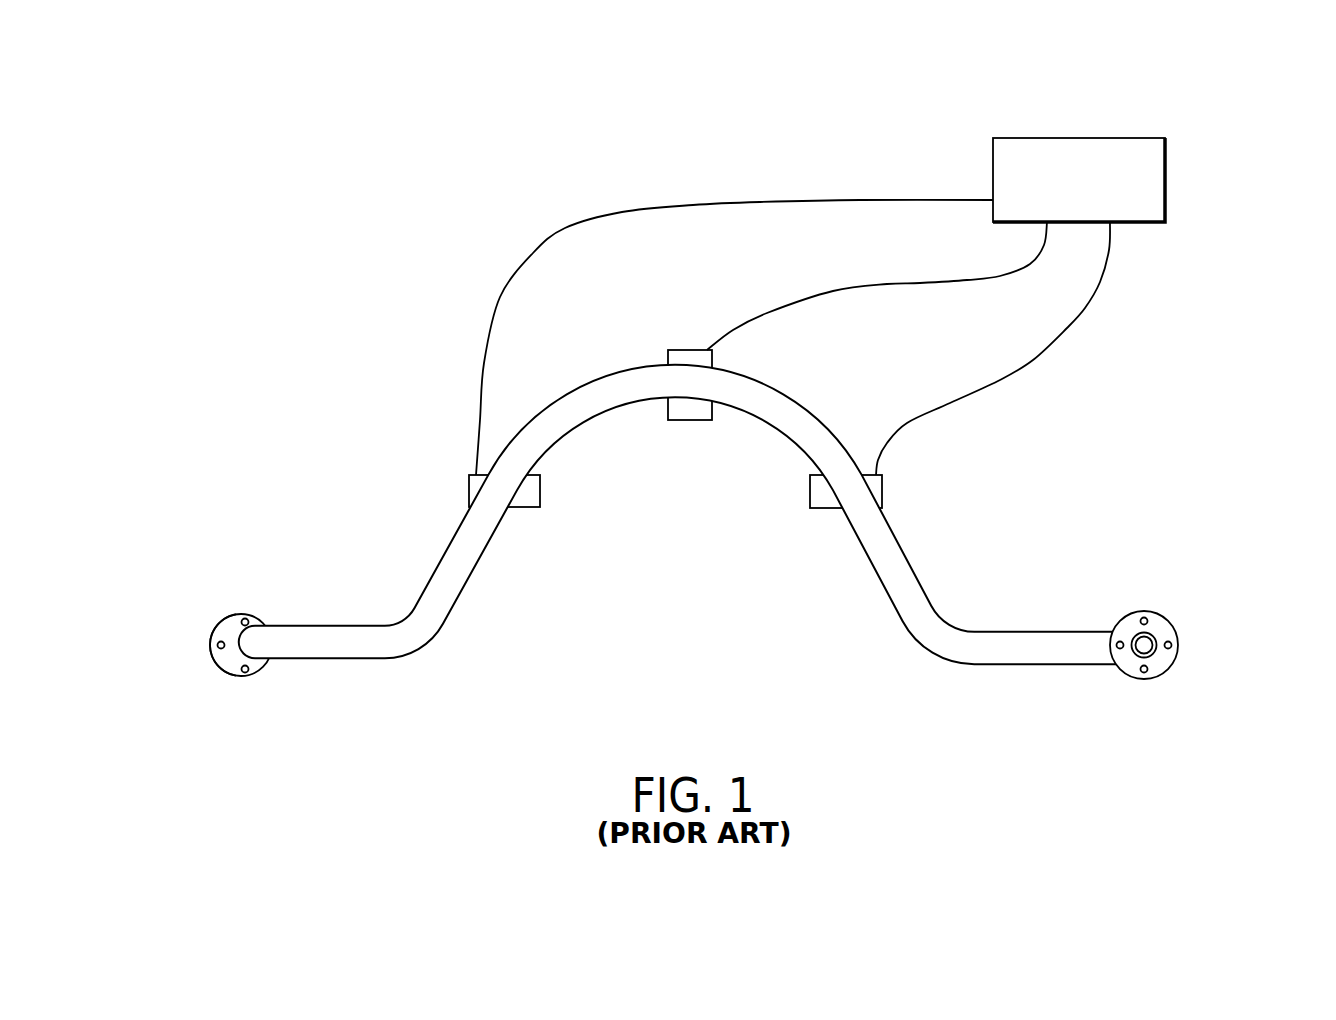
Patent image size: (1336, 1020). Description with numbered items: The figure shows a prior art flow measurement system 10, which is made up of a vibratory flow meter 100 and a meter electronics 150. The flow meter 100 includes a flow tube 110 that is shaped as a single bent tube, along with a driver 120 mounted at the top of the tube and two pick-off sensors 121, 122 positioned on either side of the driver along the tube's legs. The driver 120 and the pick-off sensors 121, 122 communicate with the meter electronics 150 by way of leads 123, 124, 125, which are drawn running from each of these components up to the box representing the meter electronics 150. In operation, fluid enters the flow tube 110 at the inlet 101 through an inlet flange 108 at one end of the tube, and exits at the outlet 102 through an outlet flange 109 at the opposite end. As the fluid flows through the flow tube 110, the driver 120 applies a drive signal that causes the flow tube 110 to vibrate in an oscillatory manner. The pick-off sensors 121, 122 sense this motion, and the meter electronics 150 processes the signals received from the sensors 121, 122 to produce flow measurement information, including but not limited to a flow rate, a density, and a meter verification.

The flow measurement system 10 is at (695, 92).
The vibratory flow meter 100 is at (408, 365).
The inlet 101 is at (280, 663).
The outlet 102 is at (1098, 665).
The inlet flange 108 is at (205, 648).
The outlet flange 109 is at (1160, 672).
The flow tube 110 is at (846, 457).
The driver 120 is at (680, 421).
The pick-off sensor 121 is at (541, 506).
The pick-off sensor 122 is at (882, 510).
The lead 123 is at (877, 283).
The lead 124 is at (640, 207).
The lead 125 is at (1013, 376).
The meter electronics 150 is at (1167, 178).